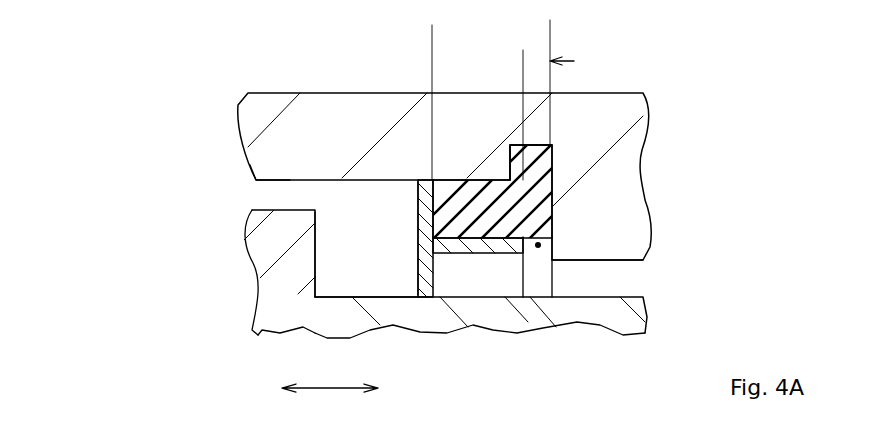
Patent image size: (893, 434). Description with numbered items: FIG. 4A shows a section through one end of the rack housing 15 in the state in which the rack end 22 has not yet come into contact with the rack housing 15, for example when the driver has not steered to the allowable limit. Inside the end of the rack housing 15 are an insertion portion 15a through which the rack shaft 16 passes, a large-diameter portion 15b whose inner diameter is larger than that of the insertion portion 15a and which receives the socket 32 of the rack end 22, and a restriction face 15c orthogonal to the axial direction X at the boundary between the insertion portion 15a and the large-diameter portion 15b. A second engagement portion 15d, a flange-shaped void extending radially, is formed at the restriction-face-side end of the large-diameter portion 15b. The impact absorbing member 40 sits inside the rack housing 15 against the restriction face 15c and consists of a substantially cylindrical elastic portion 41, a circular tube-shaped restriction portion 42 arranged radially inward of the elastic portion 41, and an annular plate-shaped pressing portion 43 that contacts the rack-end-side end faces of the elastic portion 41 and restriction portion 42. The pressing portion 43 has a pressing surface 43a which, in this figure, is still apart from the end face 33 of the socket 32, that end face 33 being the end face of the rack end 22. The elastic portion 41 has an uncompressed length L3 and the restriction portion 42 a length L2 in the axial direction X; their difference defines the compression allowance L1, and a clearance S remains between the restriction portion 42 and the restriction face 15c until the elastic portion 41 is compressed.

The rack housing 15 is at (338, 93).
The insertion portion 15a is at (640, 270).
The large-diameter portion 15b is at (257, 193).
The restriction face 15c is at (552, 266).
The second engagement portion 15d is at (548, 152).
The rack shaft 16 is at (638, 306).
The rack end 22 is at (296, 259).
The socket 32 is at (256, 259).
The end face 33 is at (318, 268).
The impact absorbing member 40 is at (487, 272).
The elastic portion 41 is at (473, 227).
The restriction portion 42 is at (502, 253).
The pressing portion 43 is at (423, 280).
The pressing surface 43a is at (417, 208).
The clearance S is at (542, 243).
The compression allowance L1 is at (538, 57).
The length of the restriction portion L2 is at (432, 61).
The length of the elastic portion L3 is at (432, 31).
The axial direction X is at (330, 377).